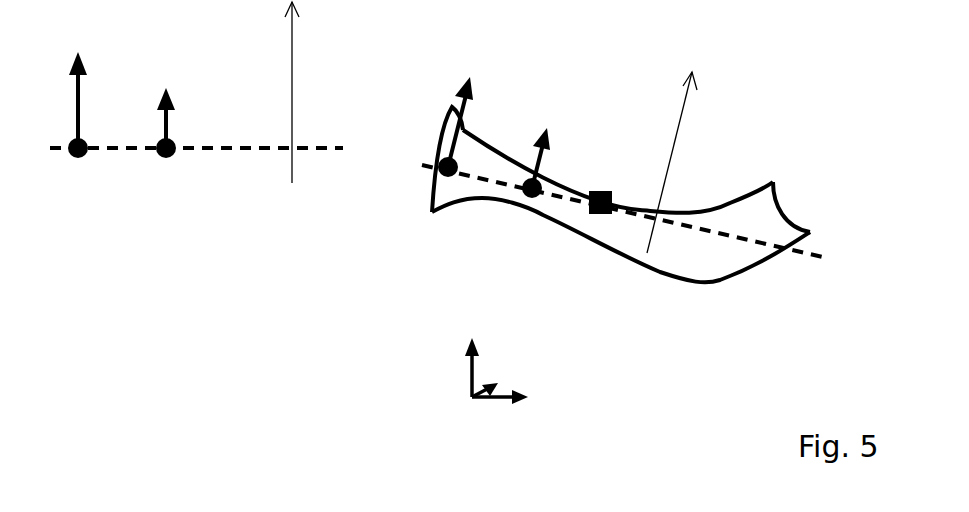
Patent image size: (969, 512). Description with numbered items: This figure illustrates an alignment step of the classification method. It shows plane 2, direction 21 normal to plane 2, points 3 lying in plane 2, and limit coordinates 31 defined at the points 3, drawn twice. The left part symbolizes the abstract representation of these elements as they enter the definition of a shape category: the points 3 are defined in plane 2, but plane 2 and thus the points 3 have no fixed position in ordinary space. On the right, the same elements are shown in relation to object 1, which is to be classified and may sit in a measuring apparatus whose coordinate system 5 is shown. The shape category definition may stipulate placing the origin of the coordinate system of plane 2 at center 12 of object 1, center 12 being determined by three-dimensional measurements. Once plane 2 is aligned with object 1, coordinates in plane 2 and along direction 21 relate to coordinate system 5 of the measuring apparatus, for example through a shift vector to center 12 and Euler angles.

The object 1 is at (675, 277).
The plane 2 is at (243, 150).
The points 3 is at (165, 158).
The coordinate system 5 is at (525, 373).
The center 12 is at (598, 188).
The direction 21 is at (293, 165).
The limit coordinates 31 is at (165, 117).